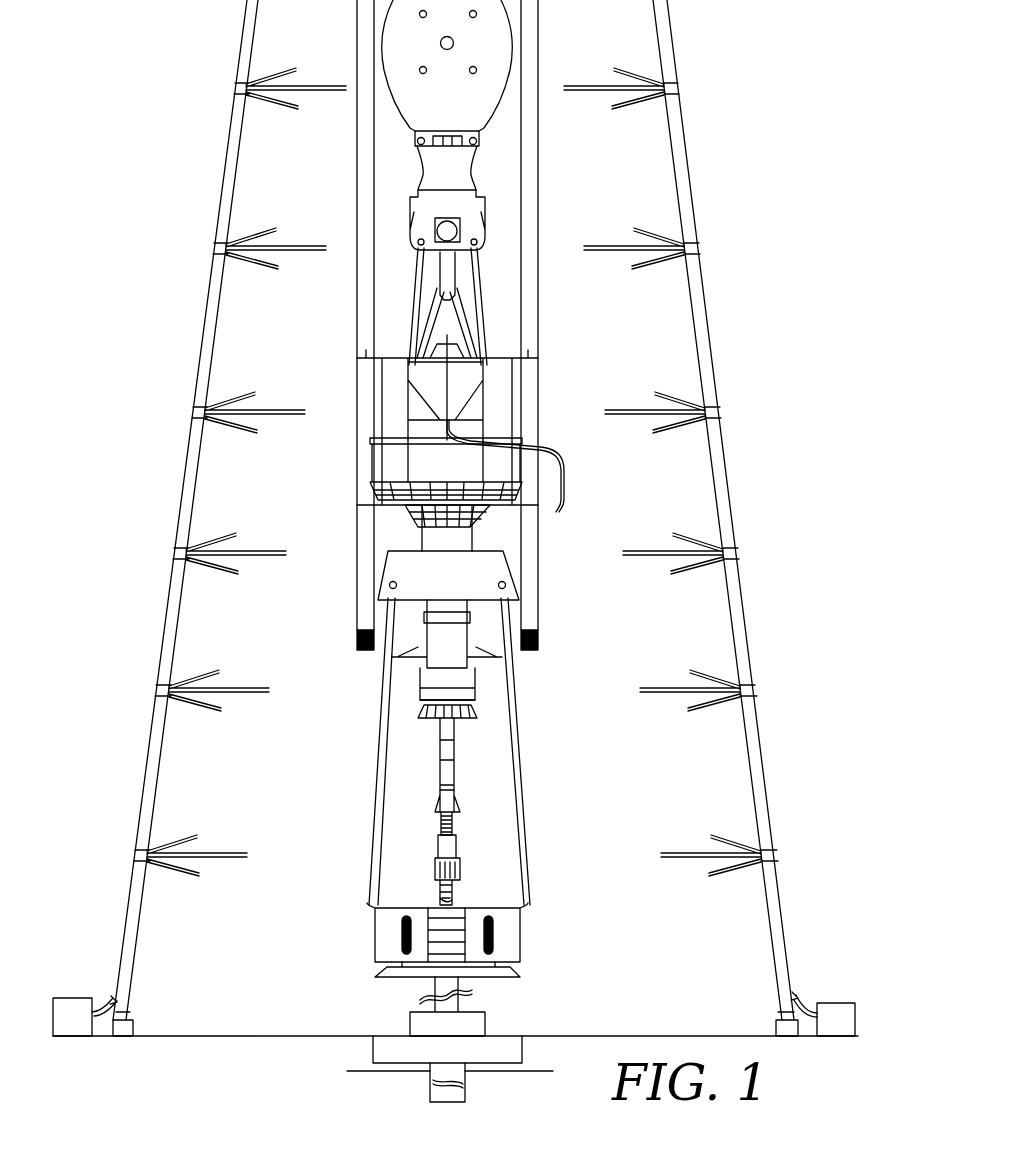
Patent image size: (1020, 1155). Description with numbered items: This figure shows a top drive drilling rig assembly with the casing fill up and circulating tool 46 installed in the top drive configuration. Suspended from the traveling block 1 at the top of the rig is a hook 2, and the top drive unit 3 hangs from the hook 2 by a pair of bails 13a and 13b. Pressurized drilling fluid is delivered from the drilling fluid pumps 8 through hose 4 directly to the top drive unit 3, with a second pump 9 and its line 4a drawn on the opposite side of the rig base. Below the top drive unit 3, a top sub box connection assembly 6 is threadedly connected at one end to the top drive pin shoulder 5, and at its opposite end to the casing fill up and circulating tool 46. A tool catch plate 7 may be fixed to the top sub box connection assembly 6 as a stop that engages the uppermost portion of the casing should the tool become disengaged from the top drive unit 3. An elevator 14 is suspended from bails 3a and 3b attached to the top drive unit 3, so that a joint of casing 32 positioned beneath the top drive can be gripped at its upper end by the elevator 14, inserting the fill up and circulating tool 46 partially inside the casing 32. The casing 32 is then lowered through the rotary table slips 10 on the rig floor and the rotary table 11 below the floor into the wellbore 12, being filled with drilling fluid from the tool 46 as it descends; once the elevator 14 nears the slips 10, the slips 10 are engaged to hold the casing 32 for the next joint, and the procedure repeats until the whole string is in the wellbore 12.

The traveling block 1 is at (483, 100).
The hook 2 is at (467, 205).
The bail 13a is at (410, 290).
The bail 13b is at (487, 290).
The top drive unit 3 is at (383, 462).
The hose 4 is at (560, 463).
The top drive pin shoulder 5 is at (420, 713).
The top sub box connection assembly 6 is at (443, 752).
The tool catch plate 7 is at (437, 808).
The casing fill up and circulating tool 46 is at (457, 845).
The bail 3a is at (379, 830).
The bail 3b is at (527, 873).
The joint of casing 32 is at (462, 902).
The elevator 14 is at (521, 937).
The rotary table slips 10 is at (487, 1020).
The rotary table 11 is at (470, 1054).
The wellbore 12 is at (455, 1099).
The drilling fluid pumps 8 is at (80, 1010).
The right control unit 9 is at (838, 1020).
The cable 4a is at (798, 993).